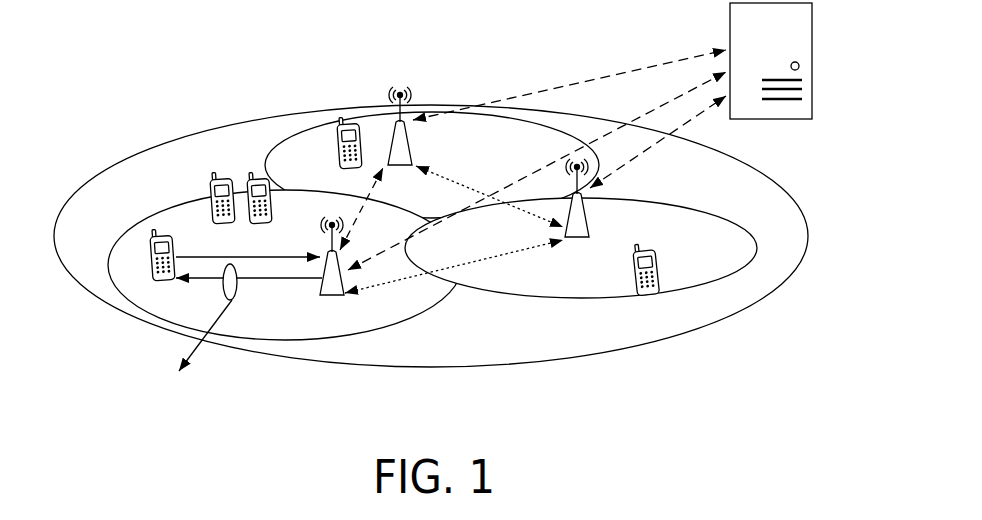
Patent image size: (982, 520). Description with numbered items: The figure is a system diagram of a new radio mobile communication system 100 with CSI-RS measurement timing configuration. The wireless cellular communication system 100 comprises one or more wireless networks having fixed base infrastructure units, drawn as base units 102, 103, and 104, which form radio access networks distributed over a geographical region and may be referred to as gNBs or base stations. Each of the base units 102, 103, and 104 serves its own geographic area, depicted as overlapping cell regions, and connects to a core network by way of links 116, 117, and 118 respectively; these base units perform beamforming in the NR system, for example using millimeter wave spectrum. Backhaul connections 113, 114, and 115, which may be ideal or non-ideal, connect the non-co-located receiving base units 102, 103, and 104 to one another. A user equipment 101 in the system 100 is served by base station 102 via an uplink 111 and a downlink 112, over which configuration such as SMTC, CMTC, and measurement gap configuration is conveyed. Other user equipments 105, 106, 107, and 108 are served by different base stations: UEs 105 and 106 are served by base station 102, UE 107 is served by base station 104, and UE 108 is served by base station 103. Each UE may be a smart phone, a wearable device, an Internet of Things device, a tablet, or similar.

The mobile communication system 100 is at (137, 52).
The user equipment 101 is at (153, 230).
The base unit 102 is at (330, 297).
The base unit 103 is at (398, 80).
The base unit 104 is at (579, 240).
The user equipment 105 is at (213, 177).
The user equipment 106 is at (251, 177).
The user equipment 107 is at (646, 255).
The user equipment 108 is at (340, 117).
The uplink 111 is at (235, 256).
The downlink 112 is at (263, 293).
The backhaul connection 113 is at (380, 226).
The backhaul connection 114 is at (470, 276).
The backhaul connection 115 is at (566, 195).
The link 116 is at (492, 221).
The link 117 is at (587, 96).
The link 118 is at (672, 158).